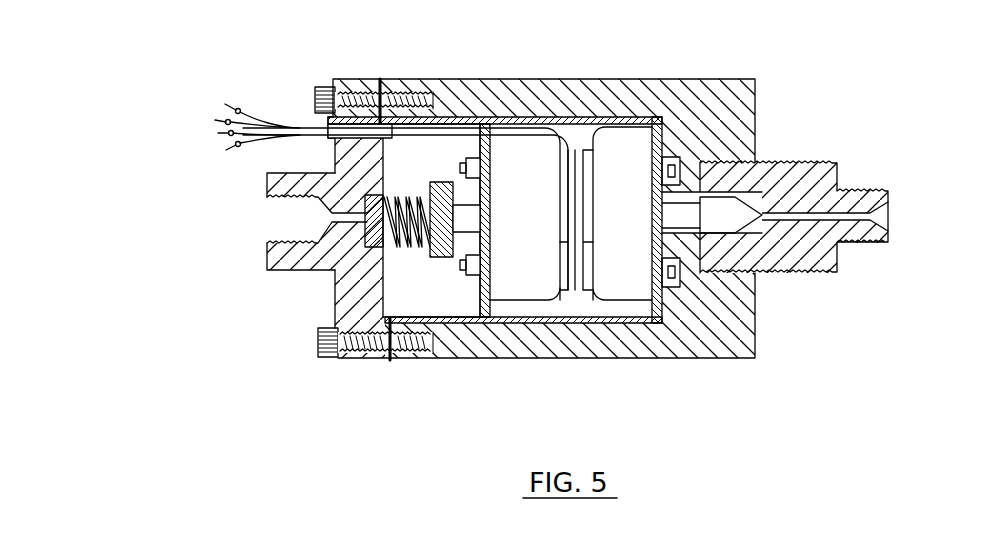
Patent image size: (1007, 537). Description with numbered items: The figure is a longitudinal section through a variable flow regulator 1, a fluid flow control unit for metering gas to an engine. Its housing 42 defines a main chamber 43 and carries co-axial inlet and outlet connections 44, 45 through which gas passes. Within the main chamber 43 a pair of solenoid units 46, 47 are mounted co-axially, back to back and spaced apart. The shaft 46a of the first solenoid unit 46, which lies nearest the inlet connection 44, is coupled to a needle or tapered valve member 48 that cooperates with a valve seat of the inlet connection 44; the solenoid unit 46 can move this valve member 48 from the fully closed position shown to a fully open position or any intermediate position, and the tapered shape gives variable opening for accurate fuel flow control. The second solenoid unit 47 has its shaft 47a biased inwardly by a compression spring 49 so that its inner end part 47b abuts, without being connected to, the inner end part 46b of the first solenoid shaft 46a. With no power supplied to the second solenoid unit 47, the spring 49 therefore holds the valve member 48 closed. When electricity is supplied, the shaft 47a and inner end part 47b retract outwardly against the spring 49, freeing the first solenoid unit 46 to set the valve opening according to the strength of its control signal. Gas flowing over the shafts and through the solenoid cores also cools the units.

The detector assembly 1 is at (617, 60).
The housing 42 is at (553, 88).
The main chamber 43 is at (568, 300).
The inlet connection 44 is at (828, 215).
The outlet connection 45 is at (307, 270).
The first solenoid unit 46 is at (633, 160).
The shaft of first solenoid unit 46a is at (673, 220).
The inner end part of first solenoid shaft 46b is at (583, 290).
The second solenoid unit 47 is at (513, 157).
The shaft of second solenoid unit 47a is at (455, 231).
The inner end part of second solenoid shaft 47b is at (570, 258).
The needle or tapered valve member 48 is at (722, 223).
The compression spring 49 is at (409, 243).